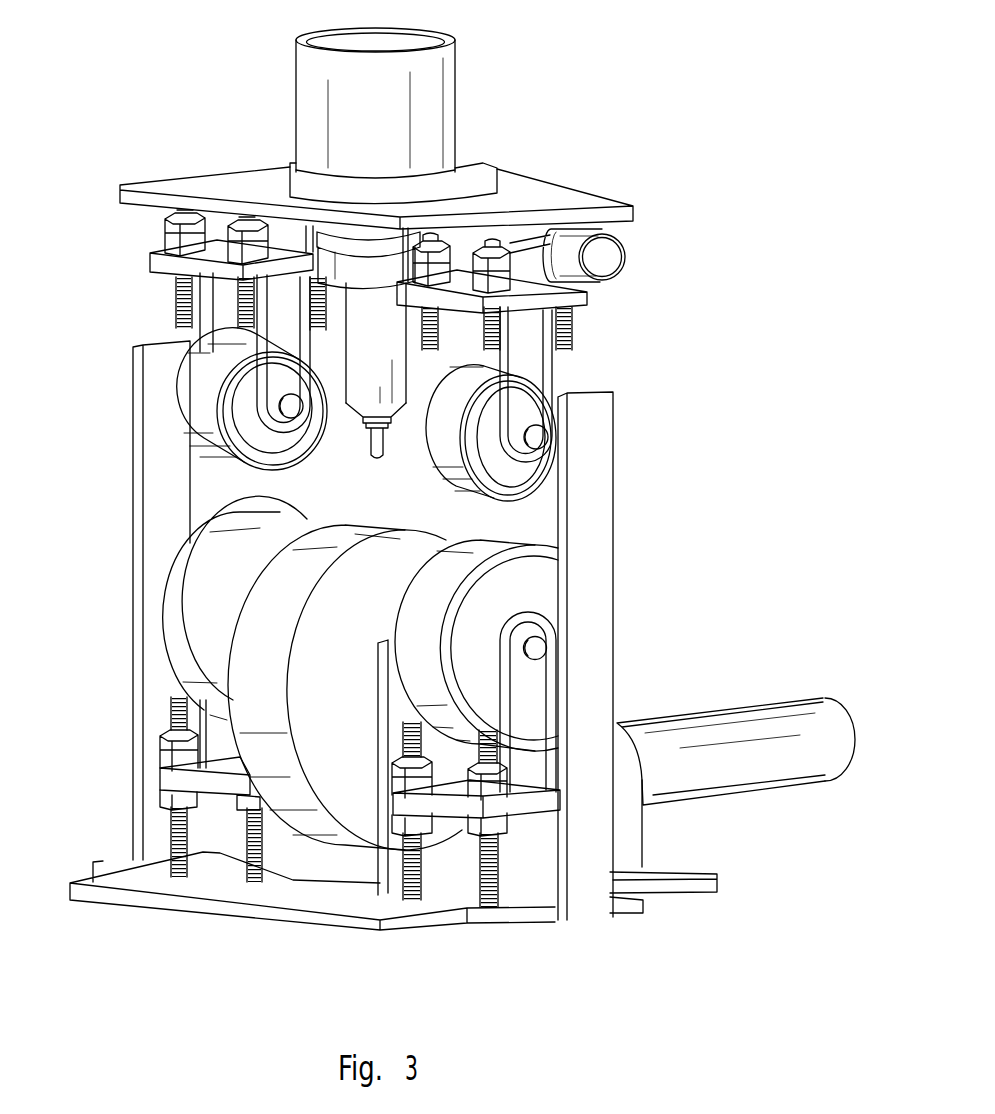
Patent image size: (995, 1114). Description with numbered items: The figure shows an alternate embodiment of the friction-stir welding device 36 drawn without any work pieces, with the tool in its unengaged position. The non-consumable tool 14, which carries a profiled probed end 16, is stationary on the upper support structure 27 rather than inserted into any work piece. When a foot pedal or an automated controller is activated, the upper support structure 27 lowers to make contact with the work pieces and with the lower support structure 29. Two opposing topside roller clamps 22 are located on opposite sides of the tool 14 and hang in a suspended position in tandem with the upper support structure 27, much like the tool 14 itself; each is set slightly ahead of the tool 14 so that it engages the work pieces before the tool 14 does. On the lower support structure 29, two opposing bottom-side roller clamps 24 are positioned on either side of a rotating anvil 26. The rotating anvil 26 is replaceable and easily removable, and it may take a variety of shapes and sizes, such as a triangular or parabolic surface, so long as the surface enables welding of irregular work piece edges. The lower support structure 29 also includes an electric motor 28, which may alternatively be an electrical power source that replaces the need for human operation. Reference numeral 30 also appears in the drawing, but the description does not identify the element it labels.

The non-consumable tool 14 is at (380, 448).
The profiled probed end 16 is at (380, 448).
The topside roller clamps 22 is at (540, 468).
The bottom-side roller clamps 24 is at (183, 627).
The rotating anvil 26 is at (298, 800).
The upper support structure 27 is at (150, 262).
The electric motor 28 is at (737, 773).
The lower support structure 29 is at (187, 780).
The adhesive dispenser 30 is at (357, 388).
The friction-stir welding device 36 is at (612, 258).